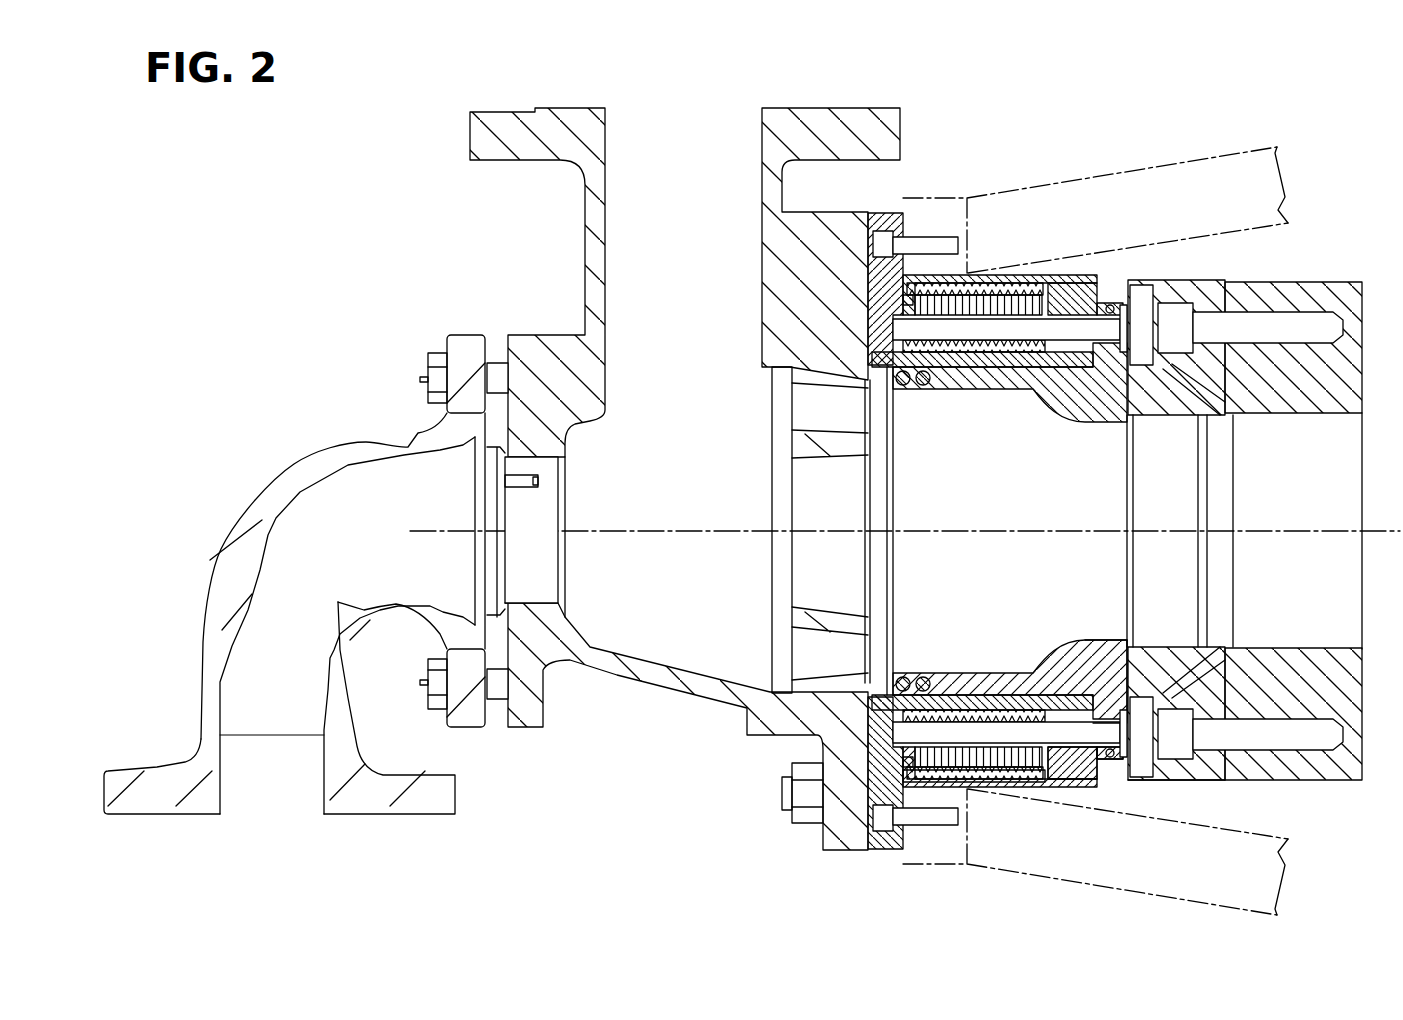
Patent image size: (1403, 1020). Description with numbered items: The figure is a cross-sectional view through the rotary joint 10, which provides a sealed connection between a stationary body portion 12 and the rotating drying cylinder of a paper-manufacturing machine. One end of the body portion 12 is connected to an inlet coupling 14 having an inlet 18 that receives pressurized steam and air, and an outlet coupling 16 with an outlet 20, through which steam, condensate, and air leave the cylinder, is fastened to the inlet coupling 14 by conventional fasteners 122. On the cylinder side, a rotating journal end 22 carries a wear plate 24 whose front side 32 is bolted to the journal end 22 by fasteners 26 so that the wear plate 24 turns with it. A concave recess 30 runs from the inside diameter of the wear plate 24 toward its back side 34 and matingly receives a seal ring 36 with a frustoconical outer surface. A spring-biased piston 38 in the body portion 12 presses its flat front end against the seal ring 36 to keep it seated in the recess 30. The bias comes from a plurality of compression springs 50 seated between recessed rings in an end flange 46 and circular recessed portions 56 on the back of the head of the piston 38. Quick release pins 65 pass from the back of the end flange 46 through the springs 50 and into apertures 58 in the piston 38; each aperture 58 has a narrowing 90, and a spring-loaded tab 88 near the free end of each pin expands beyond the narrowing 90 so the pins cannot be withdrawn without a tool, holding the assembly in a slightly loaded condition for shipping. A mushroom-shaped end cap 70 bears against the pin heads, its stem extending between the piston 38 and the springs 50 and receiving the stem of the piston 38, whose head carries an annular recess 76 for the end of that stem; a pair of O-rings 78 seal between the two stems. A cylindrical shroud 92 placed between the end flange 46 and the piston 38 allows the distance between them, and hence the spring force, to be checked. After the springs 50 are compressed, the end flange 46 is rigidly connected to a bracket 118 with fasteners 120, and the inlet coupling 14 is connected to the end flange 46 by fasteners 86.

The rotary joint 10 is at (1318, 848).
The body portion 12 is at (1058, 815).
The inlet coupling 14 is at (521, 302).
The outlet coupling 16 is at (421, 331).
The inlet 18 is at (708, 108).
The outlet 20 is at (246, 816).
The journal end 22 is at (1310, 275).
The wear plate 24 is at (1157, 300).
The fasteners 26 is at (1180, 782).
The recess 30 is at (1152, 676).
The front side 32 is at (1227, 300).
The back side 34 is at (1120, 790).
The seal ring 36 is at (1150, 367).
The piston 38 is at (1067, 275).
The end flange 46 is at (886, 212).
The compression springs 50 is at (997, 782).
The recessed portions 56 is at (1045, 790).
The apertures 58 is at (1123, 357).
The quick release pins 65 is at (1087, 787).
The end cap 70 is at (968, 287).
The annular recess 76 is at (1080, 697).
The O-rings 78 is at (923, 680).
The fasteners 86 is at (782, 792).
The spring-loaded tab 88 is at (1110, 297).
The narrowing 90 is at (1053, 367).
The shroud 92 is at (1015, 273).
The bracket 118 is at (1310, 822).
The fasteners 120 is at (930, 832).
The fasteners 122 is at (428, 378).